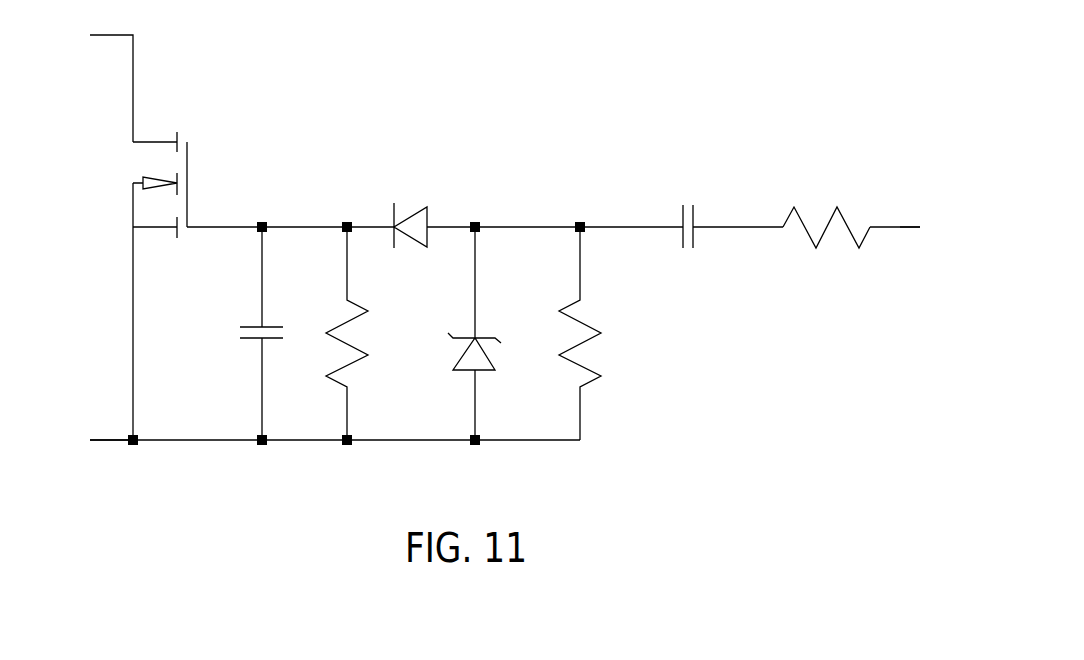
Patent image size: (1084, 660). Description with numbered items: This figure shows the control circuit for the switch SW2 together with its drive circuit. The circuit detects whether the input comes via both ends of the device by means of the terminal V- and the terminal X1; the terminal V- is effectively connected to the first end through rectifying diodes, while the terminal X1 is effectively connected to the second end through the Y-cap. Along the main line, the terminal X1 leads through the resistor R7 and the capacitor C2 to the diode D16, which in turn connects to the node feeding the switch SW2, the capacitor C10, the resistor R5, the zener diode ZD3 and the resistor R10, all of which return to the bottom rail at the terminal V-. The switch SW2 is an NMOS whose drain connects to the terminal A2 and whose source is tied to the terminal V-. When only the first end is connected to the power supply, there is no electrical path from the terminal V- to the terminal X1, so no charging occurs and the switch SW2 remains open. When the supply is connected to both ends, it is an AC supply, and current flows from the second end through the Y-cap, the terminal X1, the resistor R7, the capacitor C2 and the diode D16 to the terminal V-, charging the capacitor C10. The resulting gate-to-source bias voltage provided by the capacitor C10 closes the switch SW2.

The input terminal A2 is at (92, 81).
The switch SW2 is at (119, 185).
The capacitor C10 is at (285, 333).
The resistor R5 is at (369, 333).
The diode D16 is at (412, 211).
The zener diode ZD3 is at (496, 333).
The resistor R10 is at (613, 336).
The capacitor C2 is at (687, 211).
The resistor R7 is at (826, 211).
The terminal X1 is at (930, 228).
The terminal V- is at (92, 440).